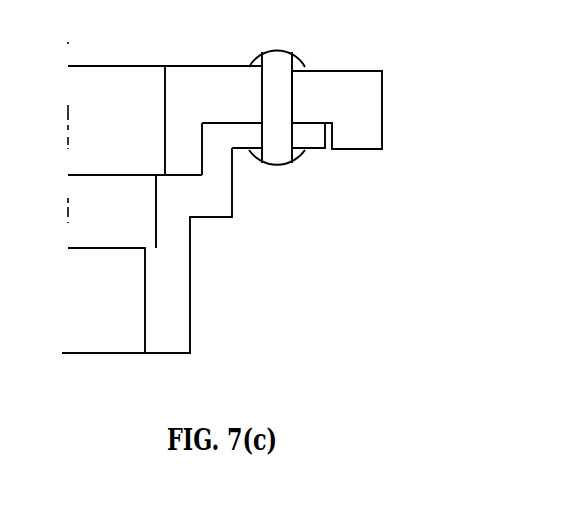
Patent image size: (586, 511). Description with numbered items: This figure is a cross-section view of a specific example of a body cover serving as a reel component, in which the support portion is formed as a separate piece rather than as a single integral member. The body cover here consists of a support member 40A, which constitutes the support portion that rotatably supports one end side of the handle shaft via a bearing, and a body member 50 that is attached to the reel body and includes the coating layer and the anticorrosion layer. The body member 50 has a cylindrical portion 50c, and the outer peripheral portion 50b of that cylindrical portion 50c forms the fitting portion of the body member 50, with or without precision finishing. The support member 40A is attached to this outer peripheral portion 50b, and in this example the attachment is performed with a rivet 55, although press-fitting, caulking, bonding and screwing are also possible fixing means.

The cylindrical portion 50c is at (165, 100).
The outer peripheral portion 50b is at (234, 181).
The body member 50 is at (339, 158).
The rivet 55 is at (298, 170).
The support member 40A is at (198, 301).